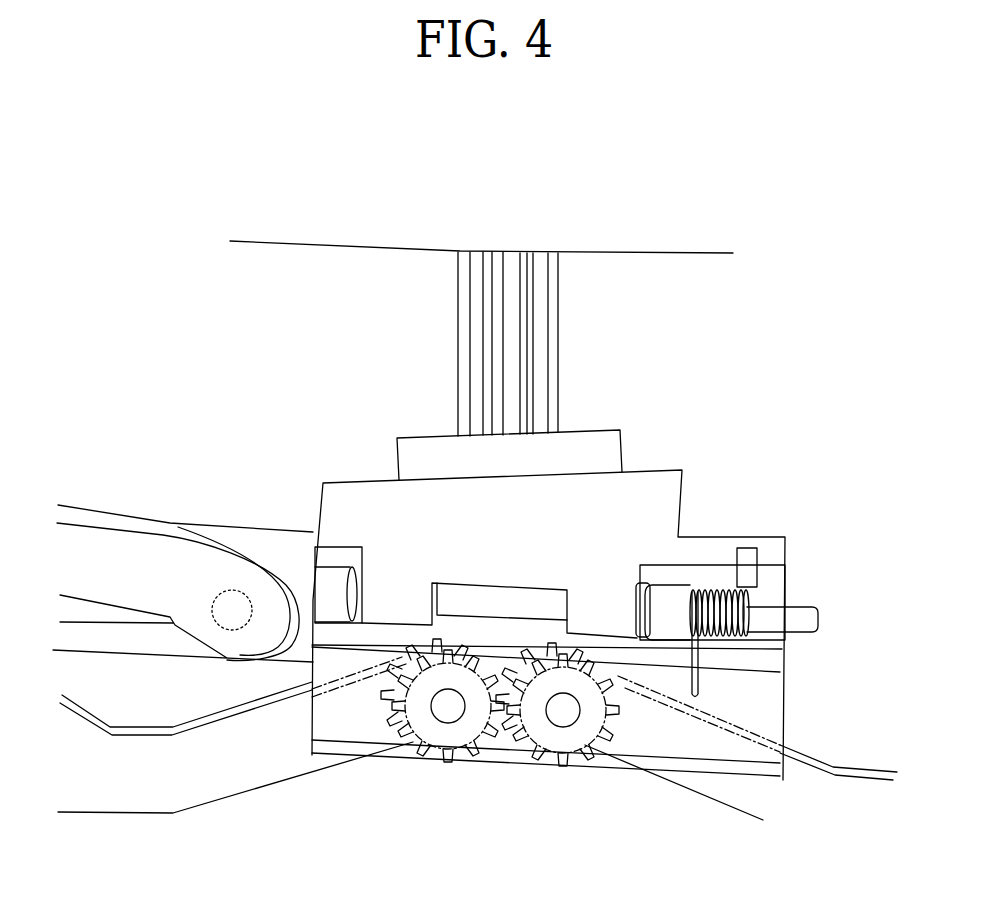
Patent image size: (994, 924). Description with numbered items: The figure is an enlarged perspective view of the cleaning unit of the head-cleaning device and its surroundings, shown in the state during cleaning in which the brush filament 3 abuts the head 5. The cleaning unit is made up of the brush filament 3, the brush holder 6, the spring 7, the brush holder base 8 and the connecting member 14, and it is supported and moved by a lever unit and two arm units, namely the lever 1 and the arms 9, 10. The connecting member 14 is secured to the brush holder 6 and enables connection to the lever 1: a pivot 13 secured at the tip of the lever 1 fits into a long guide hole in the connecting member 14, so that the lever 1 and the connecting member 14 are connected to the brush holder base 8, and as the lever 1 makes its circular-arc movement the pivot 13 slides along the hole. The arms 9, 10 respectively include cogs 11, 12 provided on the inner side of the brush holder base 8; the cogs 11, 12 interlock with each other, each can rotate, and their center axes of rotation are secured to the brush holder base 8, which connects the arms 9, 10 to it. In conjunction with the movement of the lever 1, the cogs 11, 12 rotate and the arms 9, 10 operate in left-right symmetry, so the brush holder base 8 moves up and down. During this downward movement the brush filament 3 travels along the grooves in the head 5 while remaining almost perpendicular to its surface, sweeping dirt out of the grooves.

The lever 1 is at (113, 587).
The brush filament 3 is at (623, 430).
The head 5 is at (558, 296).
The brush holder 6 is at (686, 478).
The spring 7 is at (757, 597).
The brush holder base 8 is at (400, 763).
The arm 9 is at (245, 778).
The arm 10 is at (727, 780).
The cog 11 is at (453, 735).
The cog 12 is at (553, 735).
The pivot 13 is at (230, 609).
The connecting member 14 is at (268, 529).